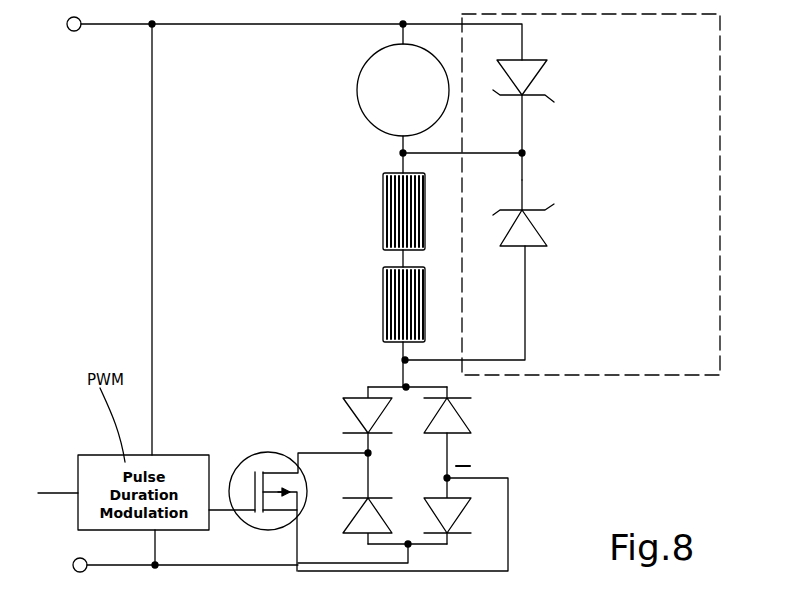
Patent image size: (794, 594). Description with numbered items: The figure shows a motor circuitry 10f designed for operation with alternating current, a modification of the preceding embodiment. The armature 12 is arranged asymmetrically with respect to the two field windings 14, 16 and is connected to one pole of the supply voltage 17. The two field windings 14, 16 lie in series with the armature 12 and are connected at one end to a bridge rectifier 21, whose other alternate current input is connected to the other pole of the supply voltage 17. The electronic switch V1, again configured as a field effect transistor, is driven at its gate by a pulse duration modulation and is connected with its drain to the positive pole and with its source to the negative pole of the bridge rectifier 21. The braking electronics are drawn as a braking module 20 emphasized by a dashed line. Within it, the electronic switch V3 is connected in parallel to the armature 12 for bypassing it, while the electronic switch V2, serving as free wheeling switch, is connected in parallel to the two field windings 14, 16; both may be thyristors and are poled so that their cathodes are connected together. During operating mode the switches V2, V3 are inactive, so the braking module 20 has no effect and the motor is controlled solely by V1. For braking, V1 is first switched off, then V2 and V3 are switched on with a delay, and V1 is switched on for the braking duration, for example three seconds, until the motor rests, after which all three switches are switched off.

The circuitry 10f is at (95, 190).
The supply voltage 17 is at (78, 31).
The armature 12 is at (372, 95).
The field winding 14 is at (395, 218).
The field winding 16 is at (398, 300).
The braking module 20 is at (680, 100).
The electronic switch V3 is at (547, 78).
The electronic switch V2 is at (527, 232).
The electronic switch V1 is at (258, 460).
The bridge rectifier 21 is at (432, 456).